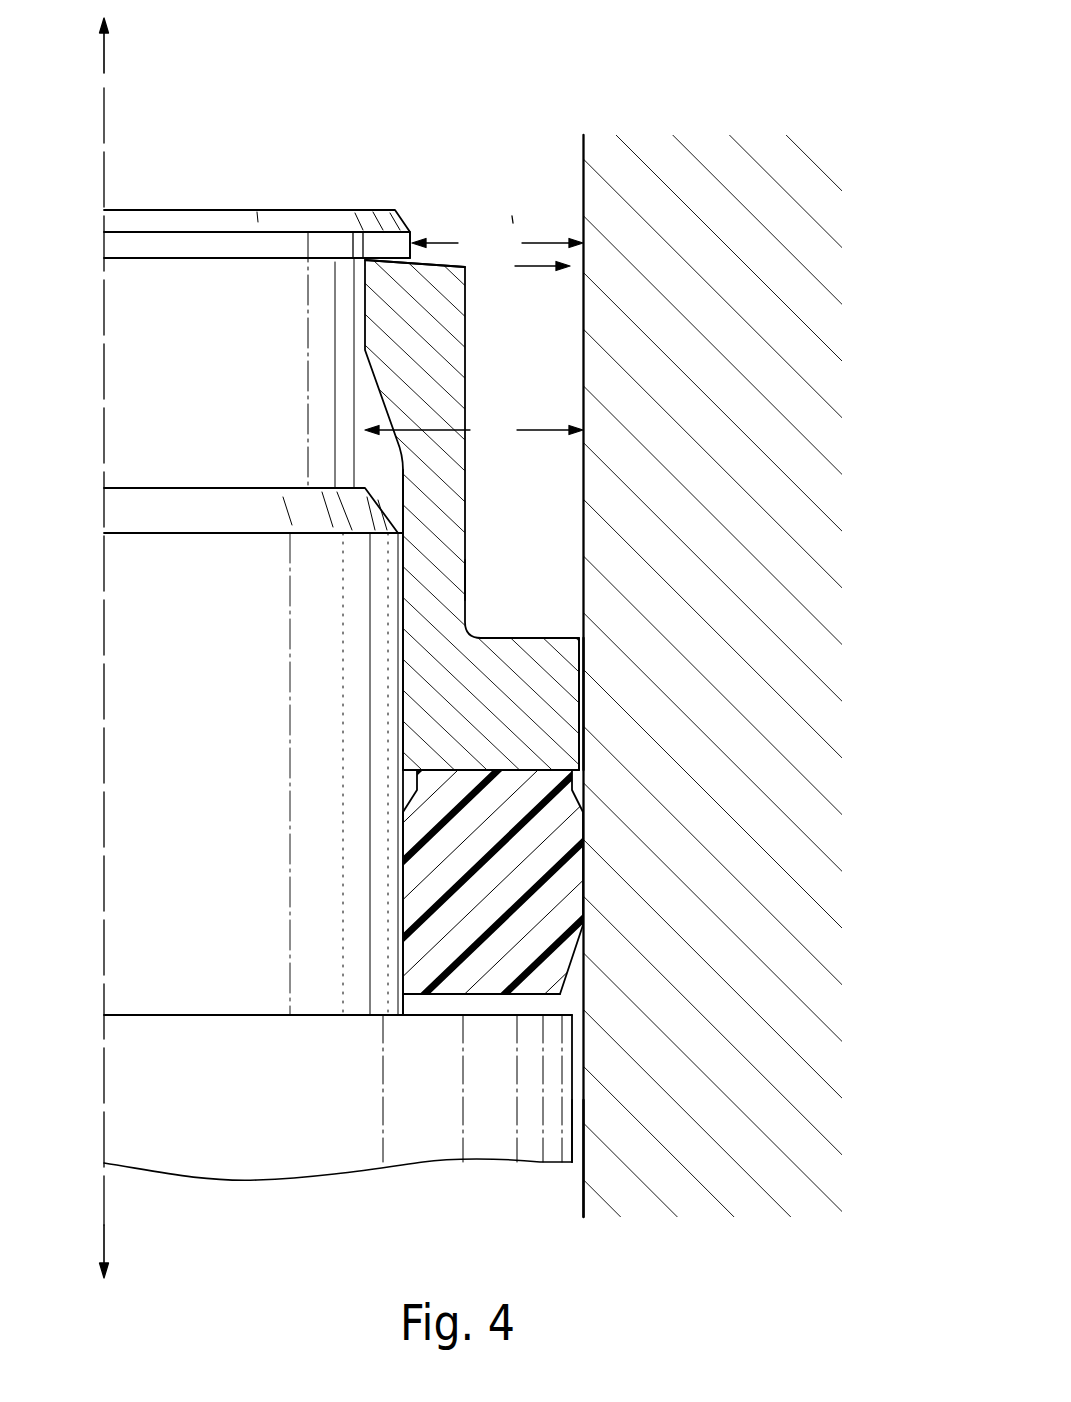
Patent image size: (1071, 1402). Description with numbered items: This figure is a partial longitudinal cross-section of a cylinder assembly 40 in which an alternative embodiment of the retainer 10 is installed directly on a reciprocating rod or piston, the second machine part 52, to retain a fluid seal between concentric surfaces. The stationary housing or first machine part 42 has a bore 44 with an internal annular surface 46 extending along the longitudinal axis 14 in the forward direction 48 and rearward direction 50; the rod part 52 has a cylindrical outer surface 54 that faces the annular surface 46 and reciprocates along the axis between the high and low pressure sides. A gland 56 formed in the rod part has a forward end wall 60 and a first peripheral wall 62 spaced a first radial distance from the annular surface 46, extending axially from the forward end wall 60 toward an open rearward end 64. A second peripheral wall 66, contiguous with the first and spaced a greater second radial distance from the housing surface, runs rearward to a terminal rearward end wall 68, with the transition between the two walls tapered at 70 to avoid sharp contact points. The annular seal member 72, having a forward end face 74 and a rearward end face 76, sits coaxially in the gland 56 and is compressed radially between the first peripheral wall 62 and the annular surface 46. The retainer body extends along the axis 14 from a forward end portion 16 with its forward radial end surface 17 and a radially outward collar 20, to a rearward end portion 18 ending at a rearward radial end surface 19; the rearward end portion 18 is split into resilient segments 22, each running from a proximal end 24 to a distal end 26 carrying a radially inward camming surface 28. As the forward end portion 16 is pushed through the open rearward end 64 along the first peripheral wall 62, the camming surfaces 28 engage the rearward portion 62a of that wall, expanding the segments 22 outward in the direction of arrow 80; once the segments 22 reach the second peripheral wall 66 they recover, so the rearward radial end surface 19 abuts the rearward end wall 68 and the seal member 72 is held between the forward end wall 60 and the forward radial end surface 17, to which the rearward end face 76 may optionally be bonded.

The retainer 10 is at (505, 582).
The longitudinal axis 14 is at (104, 118).
The forward end portion 16 is at (584, 764).
The forward radial end surface 17 is at (403, 790).
The rearward end portion 18 is at (363, 292).
The rearward radial end surface 19 is at (453, 262).
The collar 20 is at (583, 680).
The resilient segments 22 is at (465, 349).
The proximal end 24 is at (403, 630).
The distal end 26 is at (380, 258).
The camming surface 28 is at (368, 382).
The cylinder assembly 40 is at (736, 64).
The first machine part 42 is at (740, 143).
The bore 44 is at (558, 1177).
The annular surface 46 is at (584, 1202).
The forward direction 48 is at (106, 1235).
The rearward direction 50 is at (104, 56).
The second machine part 52 is at (218, 217).
The outer surface 54 is at (573, 1075).
The gland 56 is at (474, 335).
The forward end wall 60 is at (470, 1014).
The first peripheral wall 62 is at (403, 1001).
The rearward portion of the first peripheral wall 62a is at (412, 236).
The open rearward end 64 is at (510, 203).
The second peripheral wall 66 is at (366, 481).
The rearward end wall 68 is at (365, 258).
The tapered transition 70 is at (386, 519).
The seal member 72 is at (584, 857).
The forward end face 74 is at (440, 996).
The rearward end face 76 is at (476, 768).
The arrow 80 is at (527, 270).